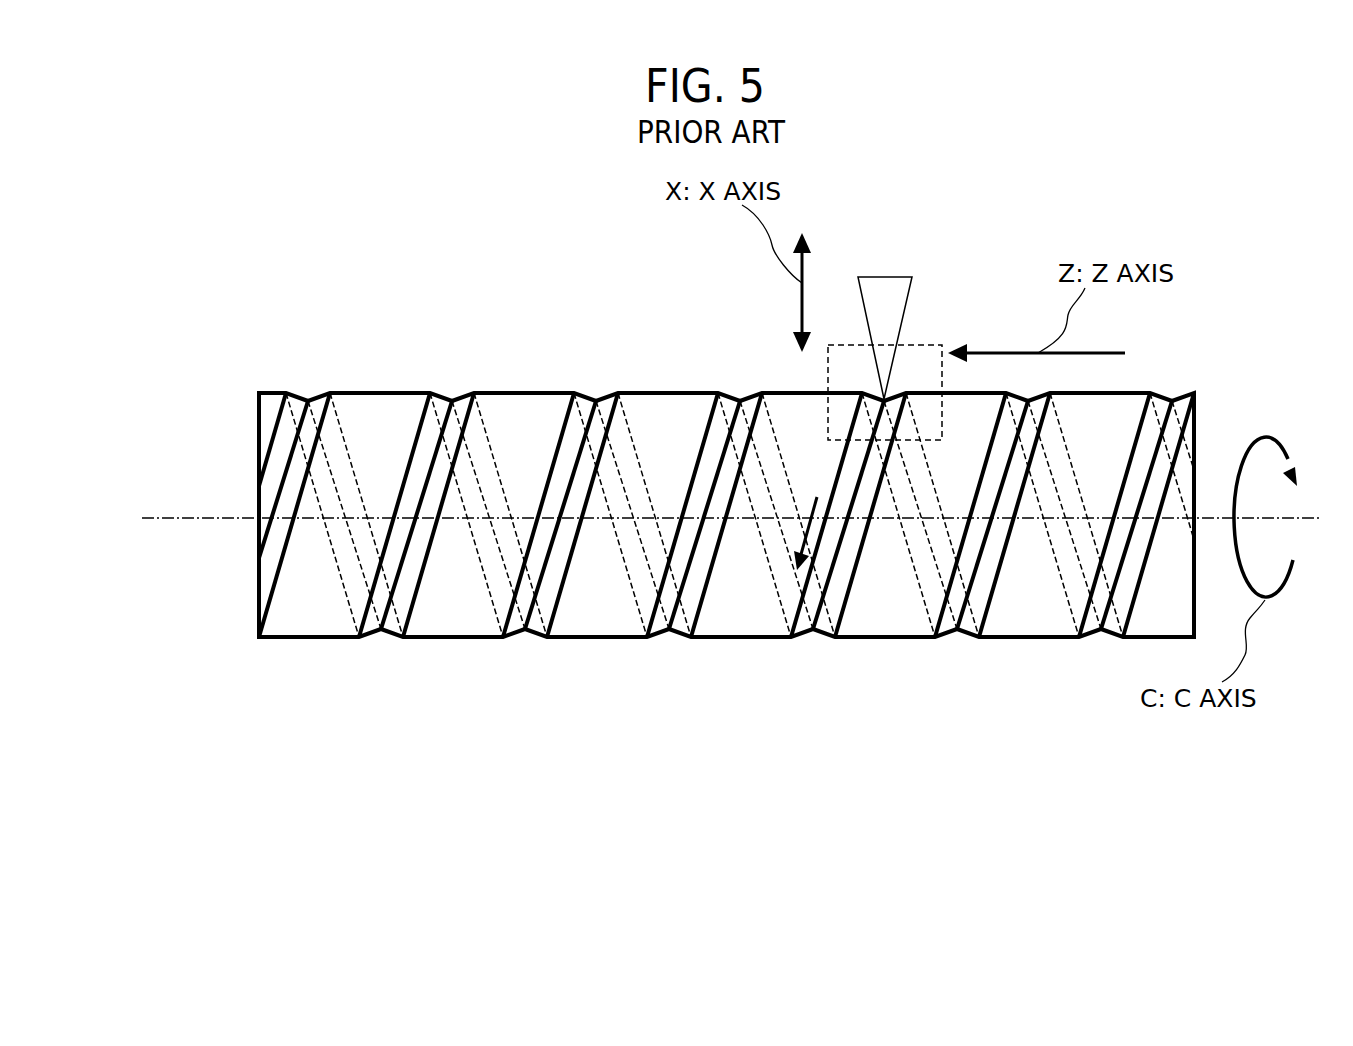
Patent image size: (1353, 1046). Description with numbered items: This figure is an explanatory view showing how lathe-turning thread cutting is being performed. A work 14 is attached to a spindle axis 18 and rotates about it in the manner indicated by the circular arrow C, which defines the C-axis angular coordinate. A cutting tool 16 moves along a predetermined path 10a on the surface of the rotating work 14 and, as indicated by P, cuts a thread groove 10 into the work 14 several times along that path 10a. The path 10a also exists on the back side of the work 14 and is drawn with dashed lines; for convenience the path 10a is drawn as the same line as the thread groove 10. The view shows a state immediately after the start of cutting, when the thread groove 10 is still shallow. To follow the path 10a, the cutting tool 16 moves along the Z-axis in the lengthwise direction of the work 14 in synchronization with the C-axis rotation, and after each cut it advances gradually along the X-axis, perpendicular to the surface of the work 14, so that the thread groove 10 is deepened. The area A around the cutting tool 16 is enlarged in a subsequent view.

The thread groove 10 is at (596, 398).
The predetermined path 10a is at (553, 560).
The work 14 is at (297, 637).
The cutting tool 16 is at (878, 277).
The spindle axis 18 is at (197, 518).
The area A is at (828, 388).
The cutting indication P is at (807, 523).